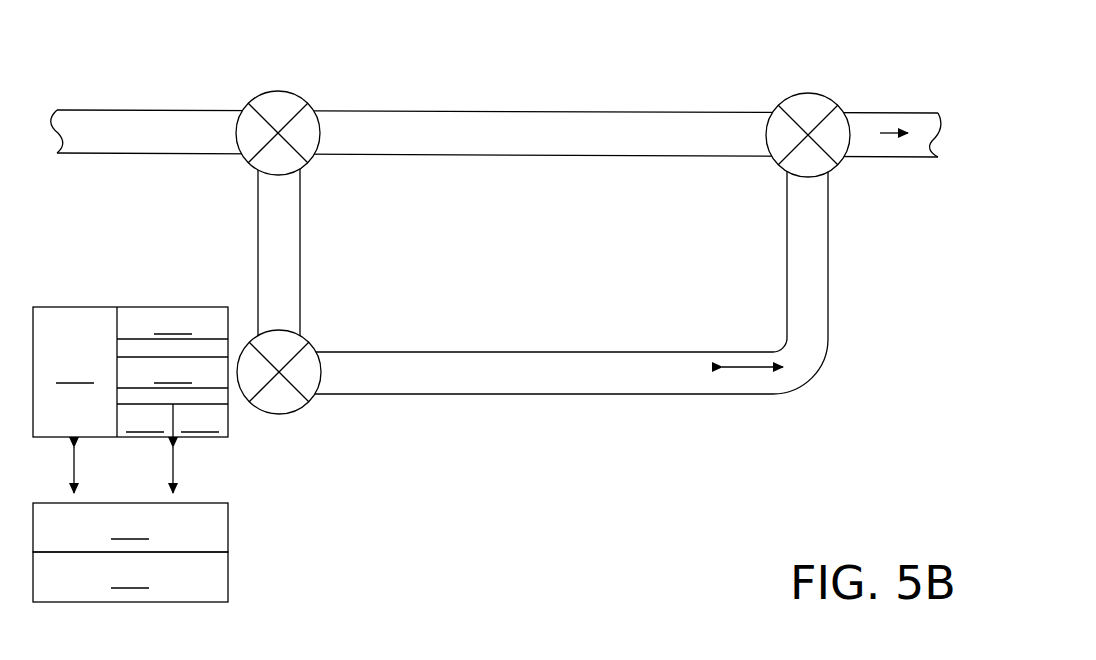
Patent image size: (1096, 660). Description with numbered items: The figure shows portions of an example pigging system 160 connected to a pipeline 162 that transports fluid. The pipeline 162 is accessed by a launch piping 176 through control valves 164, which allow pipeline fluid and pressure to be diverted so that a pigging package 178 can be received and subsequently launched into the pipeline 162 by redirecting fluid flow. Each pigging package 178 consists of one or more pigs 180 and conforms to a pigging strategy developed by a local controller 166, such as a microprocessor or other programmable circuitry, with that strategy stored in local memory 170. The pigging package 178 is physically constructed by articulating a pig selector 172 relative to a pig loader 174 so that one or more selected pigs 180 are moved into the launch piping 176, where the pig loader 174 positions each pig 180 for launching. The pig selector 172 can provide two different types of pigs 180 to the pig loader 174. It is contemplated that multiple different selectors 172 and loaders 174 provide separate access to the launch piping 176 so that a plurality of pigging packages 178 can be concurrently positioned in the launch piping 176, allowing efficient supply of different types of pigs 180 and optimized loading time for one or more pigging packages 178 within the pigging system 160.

The pigging system 160 is at (115, 30).
The pipeline 162 is at (516, 112).
The control valve 164 is at (305, 165).
The electronic controller 166 is at (130, 527).
The local memory 170 is at (130, 577).
The pig selector 172 is at (143, 373).
The pig loader 174 is at (75, 372).
The launch piping 176 is at (595, 412).
The pigging package 178 is at (212, 305).
The pig 180 is at (118, 306).